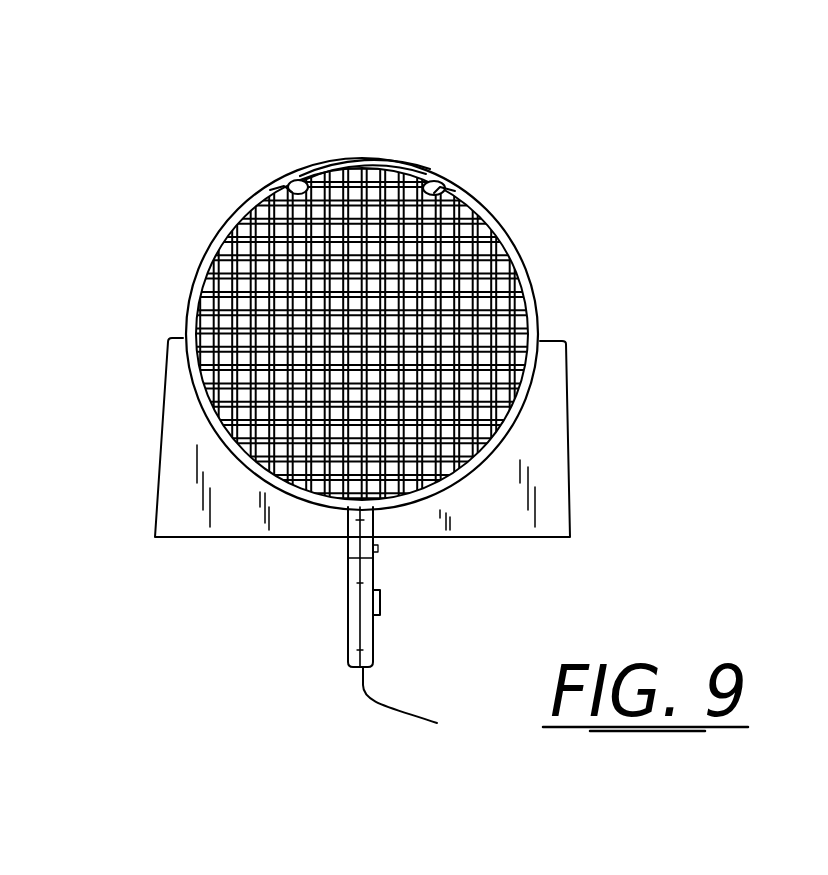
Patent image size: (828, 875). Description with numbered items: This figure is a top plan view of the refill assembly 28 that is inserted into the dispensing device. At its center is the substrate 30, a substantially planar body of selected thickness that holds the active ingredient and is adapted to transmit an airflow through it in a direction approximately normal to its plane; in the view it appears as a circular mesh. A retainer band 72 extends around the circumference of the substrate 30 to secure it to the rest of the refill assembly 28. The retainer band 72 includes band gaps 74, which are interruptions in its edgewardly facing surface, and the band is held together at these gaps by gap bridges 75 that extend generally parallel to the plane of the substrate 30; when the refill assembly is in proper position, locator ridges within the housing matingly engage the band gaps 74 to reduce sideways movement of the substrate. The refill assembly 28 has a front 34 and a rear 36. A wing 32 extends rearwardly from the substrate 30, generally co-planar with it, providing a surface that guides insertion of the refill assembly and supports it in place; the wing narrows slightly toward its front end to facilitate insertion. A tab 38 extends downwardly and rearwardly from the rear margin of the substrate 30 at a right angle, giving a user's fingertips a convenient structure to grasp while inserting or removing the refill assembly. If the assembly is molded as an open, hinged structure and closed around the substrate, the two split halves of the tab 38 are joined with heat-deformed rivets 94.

The refill assembly 28 is at (190, 296).
The substrate 30 is at (275, 260).
The wing 32 is at (566, 435).
The front 34 is at (370, 157).
The rear 36 is at (426, 708).
The tab 38 is at (347, 637).
The retainer band 72 is at (525, 262).
The band gaps 74 is at (290, 182).
The gap bridges 75 is at (297, 183).
The heat-deformed rivets 94 is at (382, 605).